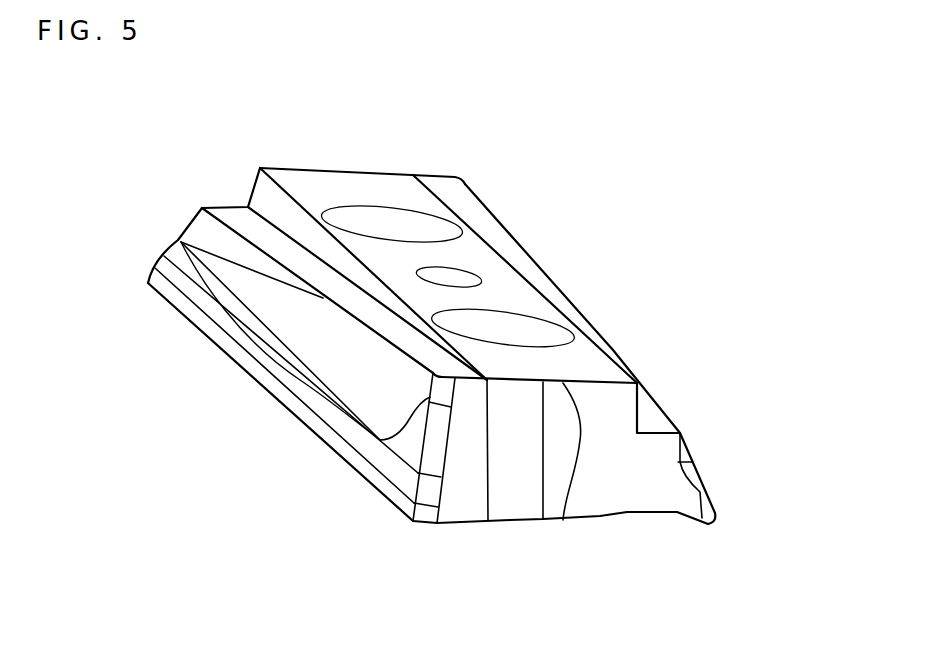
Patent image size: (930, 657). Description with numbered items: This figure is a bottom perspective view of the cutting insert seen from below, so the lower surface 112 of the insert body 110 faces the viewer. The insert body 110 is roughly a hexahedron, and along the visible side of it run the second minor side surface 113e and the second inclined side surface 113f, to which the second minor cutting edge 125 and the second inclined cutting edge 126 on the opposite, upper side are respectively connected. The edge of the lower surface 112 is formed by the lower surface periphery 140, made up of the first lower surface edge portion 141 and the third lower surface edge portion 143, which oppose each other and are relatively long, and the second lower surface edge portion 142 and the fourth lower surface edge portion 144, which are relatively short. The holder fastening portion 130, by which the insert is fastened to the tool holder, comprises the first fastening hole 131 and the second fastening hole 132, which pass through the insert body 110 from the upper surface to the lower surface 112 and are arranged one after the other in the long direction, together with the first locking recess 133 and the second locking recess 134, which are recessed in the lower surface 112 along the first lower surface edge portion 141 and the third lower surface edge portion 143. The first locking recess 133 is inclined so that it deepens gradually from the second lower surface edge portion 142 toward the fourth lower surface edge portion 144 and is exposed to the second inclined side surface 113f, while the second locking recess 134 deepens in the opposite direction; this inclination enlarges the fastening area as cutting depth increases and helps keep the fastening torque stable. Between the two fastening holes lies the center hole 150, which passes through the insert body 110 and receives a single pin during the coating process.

The insert body 110 is at (448, 250).
The lower surface 112 is at (417, 194).
The second minor side surface 113e is at (473, 500).
The second inclined side surface 113f is at (655, 468).
The second minor cutting edge 125 is at (450, 528).
The second inclined cutting edge 126 is at (627, 521).
The holder fastening portion 130 is at (458, 287).
The first fastening hole 131 is at (412, 231).
The second fastening hole 132 is at (515, 332).
The first locking recess 133 is at (642, 421).
The second locking recess 134 is at (258, 231).
The lower surface periphery 140 is at (607, 354).
The first lower surface edge portion 141 is at (613, 349).
The second lower surface edge portion 142 is at (363, 168).
The third lower surface edge portion 143 is at (323, 298).
The fourth lower surface edge portion 144 is at (563, 523).
The center hole 150 is at (453, 278).